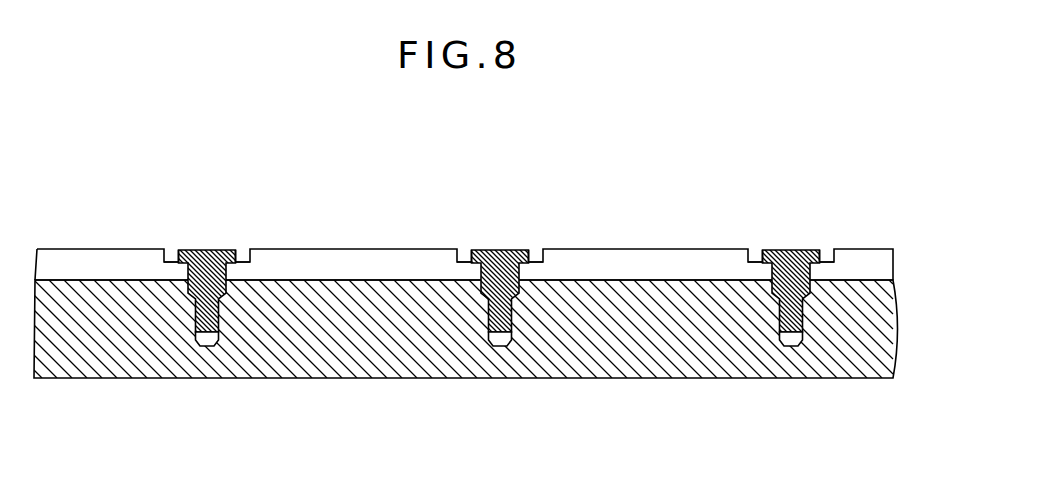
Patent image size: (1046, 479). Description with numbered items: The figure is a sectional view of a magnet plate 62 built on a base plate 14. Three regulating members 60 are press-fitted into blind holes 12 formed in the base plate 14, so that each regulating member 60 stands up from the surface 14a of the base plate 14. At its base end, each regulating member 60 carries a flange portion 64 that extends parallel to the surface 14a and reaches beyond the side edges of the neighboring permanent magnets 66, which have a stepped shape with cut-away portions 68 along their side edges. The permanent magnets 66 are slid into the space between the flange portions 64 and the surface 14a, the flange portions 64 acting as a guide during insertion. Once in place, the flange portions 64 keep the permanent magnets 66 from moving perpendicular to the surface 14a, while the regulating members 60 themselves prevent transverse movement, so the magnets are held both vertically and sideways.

The blind hole 12 is at (217, 345).
The base plate 14 is at (350, 350).
The surface of the base plate 14a is at (645, 282).
The regulating member 60 is at (202, 248).
The magnet plate 62 is at (466, 299).
The flange portion 64 is at (230, 248).
The permanent magnet 66 is at (98, 248).
The cut-away portion 68 is at (170, 250).